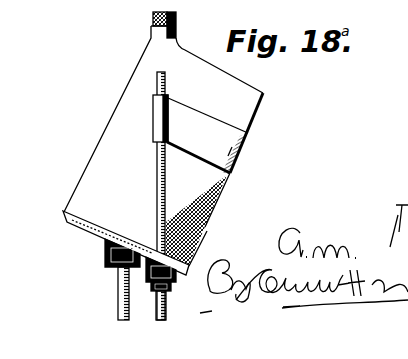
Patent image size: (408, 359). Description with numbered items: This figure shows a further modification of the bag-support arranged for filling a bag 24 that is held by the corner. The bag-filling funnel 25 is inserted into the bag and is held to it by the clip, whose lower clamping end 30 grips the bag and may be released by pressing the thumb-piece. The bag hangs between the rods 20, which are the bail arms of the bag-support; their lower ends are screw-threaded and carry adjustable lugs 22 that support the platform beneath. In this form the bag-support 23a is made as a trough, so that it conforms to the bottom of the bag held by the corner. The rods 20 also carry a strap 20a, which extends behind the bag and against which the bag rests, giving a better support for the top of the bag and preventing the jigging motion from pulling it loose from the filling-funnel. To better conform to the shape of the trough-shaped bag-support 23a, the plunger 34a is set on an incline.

The rods 20 is at (156, 172).
The strap 20a is at (242, 152).
The adjustable lugs 22 is at (168, 291).
The bag-support 23a is at (83, 216).
The bag 24 is at (255, 115).
The bag-filling funnel 25 is at (117, 14).
The clamping end 30 is at (178, 30).
The plunger 34a is at (98, 236).